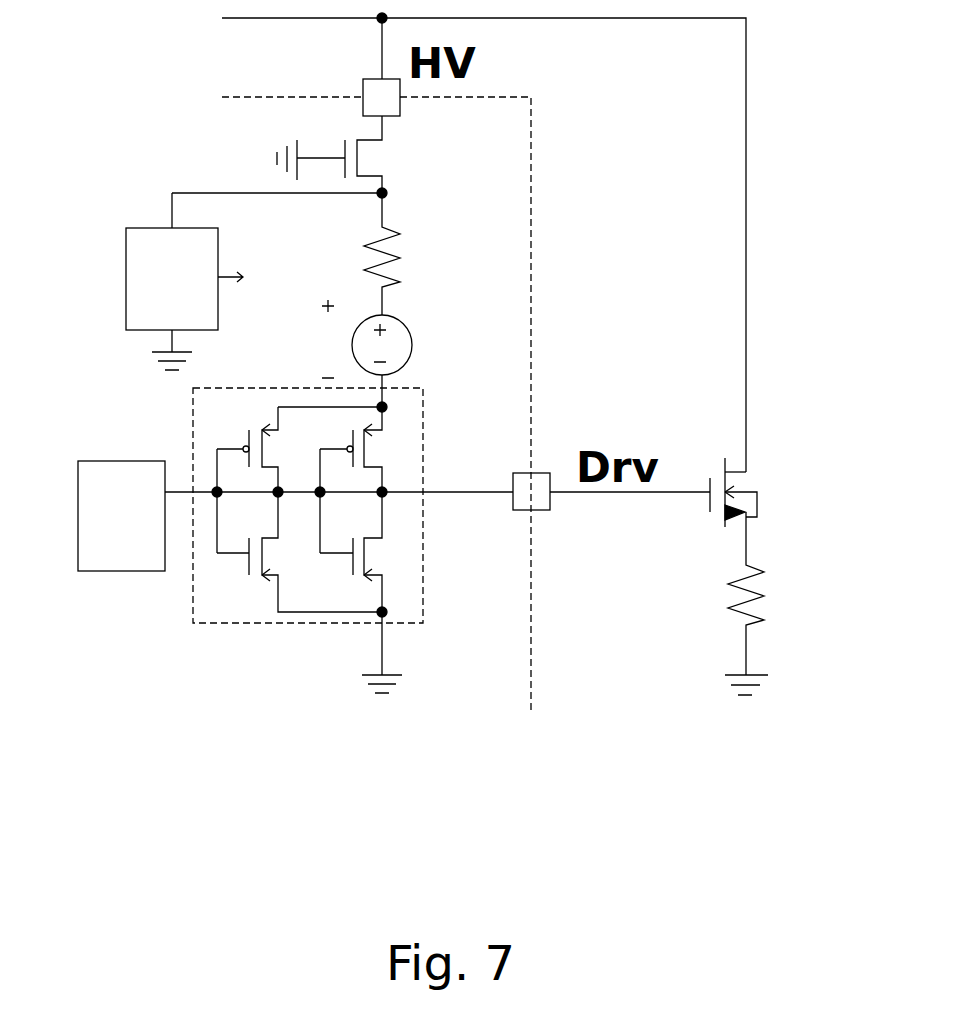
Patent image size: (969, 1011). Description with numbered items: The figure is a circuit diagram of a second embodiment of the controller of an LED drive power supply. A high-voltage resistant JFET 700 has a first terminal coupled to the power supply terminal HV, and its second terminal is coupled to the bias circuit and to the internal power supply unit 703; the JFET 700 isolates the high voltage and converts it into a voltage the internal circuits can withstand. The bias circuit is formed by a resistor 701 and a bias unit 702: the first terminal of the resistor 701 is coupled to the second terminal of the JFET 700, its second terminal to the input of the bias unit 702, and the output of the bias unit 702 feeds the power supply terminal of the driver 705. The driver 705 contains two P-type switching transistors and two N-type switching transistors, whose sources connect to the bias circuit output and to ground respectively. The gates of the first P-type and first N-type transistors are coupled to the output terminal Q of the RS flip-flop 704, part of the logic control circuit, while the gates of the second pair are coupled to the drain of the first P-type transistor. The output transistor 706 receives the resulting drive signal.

The JFET 700 is at (398, 186).
The resistor 701 is at (412, 278).
The bias unit 702 is at (425, 350).
The internal power supply unit 703 is at (122, 278).
The RS flip-flop 704 is at (128, 572).
The driver 705 is at (425, 447).
The output transistor 706 is at (757, 478).